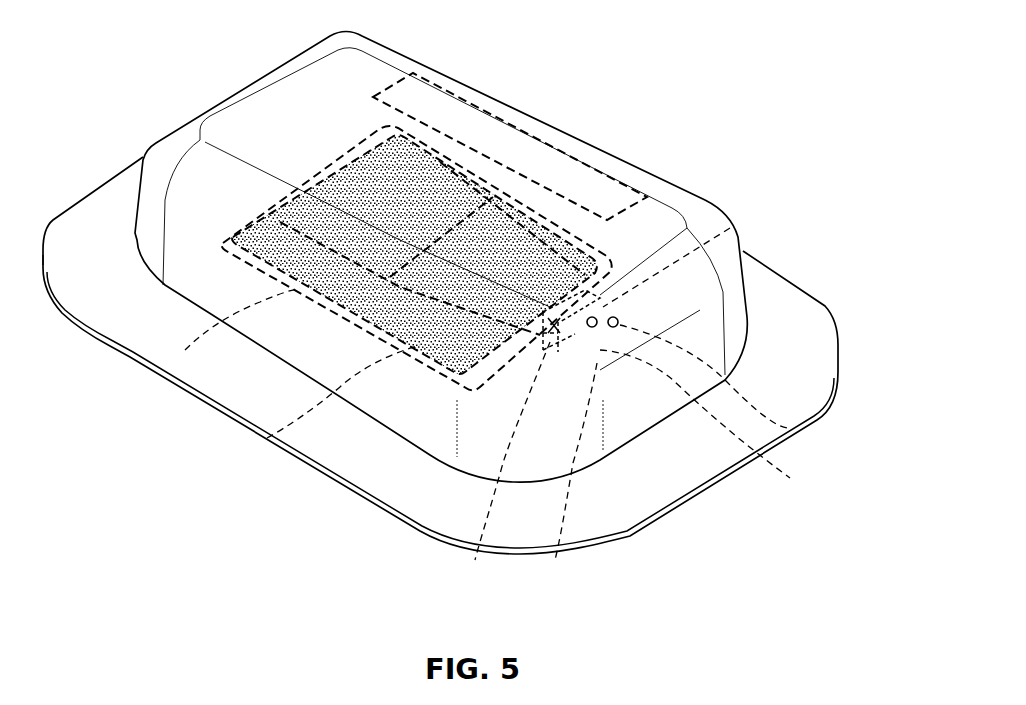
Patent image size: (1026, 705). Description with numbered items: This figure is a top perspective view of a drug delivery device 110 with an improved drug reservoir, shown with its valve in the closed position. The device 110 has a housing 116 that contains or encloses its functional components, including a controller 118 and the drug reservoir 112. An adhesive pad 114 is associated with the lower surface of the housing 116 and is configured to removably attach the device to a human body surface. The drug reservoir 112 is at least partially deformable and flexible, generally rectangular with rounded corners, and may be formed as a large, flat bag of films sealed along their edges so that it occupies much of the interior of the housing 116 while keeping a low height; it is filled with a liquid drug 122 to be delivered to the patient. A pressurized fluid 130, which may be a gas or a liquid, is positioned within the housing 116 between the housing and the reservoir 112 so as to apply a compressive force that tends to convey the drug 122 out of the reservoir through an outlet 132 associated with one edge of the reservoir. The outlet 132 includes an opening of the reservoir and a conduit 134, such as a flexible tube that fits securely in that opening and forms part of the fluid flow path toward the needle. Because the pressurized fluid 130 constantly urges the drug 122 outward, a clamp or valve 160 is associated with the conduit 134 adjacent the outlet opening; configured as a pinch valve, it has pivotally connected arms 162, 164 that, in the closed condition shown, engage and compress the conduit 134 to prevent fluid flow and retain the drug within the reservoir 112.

The drug delivery device 110 is at (108, 125).
The drug reservoir 112 is at (185, 350).
The adhesive pad 114 is at (833, 323).
The housing 116 is at (545, 120).
The controller 118 is at (443, 90).
The drug 122 is at (267, 438).
The pressurized fluid 130 is at (303, 133).
The outlet 132 is at (555, 560).
The conduit 134 is at (790, 478).
The clamp or valve 160 is at (787, 428).
The arm 162 is at (730, 228).
The arm 164 is at (475, 560).